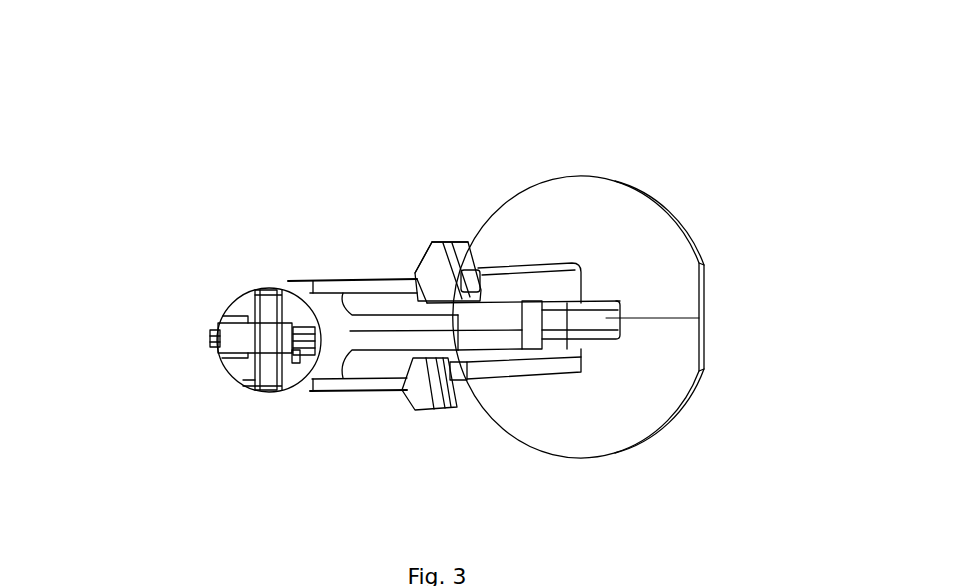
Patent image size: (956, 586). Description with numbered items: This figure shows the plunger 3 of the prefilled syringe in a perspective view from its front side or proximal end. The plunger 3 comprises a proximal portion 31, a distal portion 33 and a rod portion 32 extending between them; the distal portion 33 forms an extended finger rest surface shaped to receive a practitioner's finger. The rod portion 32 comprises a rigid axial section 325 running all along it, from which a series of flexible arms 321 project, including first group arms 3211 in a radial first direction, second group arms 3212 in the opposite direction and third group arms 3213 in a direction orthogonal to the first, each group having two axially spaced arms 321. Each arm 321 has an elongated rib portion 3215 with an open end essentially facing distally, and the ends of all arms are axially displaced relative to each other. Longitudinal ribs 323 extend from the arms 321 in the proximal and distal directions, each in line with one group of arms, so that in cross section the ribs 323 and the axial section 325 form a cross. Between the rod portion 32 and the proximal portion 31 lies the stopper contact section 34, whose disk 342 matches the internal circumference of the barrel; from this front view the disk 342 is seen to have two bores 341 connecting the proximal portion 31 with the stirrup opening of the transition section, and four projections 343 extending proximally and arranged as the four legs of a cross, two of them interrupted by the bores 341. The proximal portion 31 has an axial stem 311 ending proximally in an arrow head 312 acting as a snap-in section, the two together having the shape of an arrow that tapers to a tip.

The plunger 3 is at (609, 166).
The proximal portion 31 is at (180, 279).
The axial stem 311 is at (250, 340).
The arrow head 312 is at (232, 298).
The rod portion 32 is at (526, 226).
The flexible arms 321 is at (392, 200).
The first group arms 3211 is at (410, 250).
The second group arms 3212 is at (432, 434).
The third group arms 3213 is at (496, 364).
The elongated rib portion 3215 is at (433, 243).
The longitudinal ribs 323 is at (330, 292).
The rigid axial section 325 is at (567, 303).
The distal portion 33 is at (676, 190).
The stopper contact section 34 is at (223, 429).
The bores 341 is at (295, 382).
The disk 342 is at (250, 386).
The projections 343 is at (306, 360).